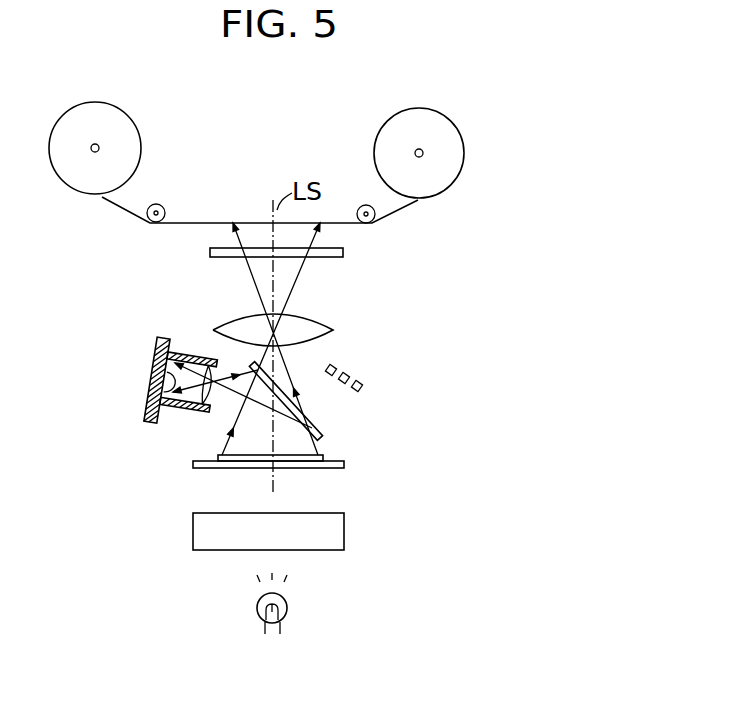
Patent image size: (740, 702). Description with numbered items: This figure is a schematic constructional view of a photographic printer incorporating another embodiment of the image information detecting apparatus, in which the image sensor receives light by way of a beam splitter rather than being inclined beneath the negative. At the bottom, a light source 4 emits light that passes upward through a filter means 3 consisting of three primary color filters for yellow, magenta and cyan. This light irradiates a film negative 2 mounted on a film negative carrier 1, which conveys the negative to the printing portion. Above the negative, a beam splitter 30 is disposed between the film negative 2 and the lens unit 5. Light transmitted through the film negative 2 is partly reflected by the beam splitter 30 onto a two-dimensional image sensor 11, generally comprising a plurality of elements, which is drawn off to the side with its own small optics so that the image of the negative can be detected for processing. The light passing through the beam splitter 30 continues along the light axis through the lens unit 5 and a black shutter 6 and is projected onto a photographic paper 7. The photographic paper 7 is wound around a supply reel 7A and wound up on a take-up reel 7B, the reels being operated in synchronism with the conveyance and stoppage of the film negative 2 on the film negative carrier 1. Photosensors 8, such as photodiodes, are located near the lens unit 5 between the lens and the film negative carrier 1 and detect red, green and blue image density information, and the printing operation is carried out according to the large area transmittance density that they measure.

The supply reel 7A is at (120, 118).
The take-up reel 7B is at (443, 125).
The photographic paper 7 is at (192, 222).
The black shutter 6 is at (345, 253).
The lens unit 5 is at (320, 323).
The photosensors 8 is at (375, 385).
The beam splitter 30 is at (325, 436).
The two-dimensional image sensor 11 is at (183, 402).
The film negative 2 is at (307, 453).
The film negative carrier 1 is at (337, 470).
The filter means 3 is at (355, 505).
The light source 4 is at (290, 610).